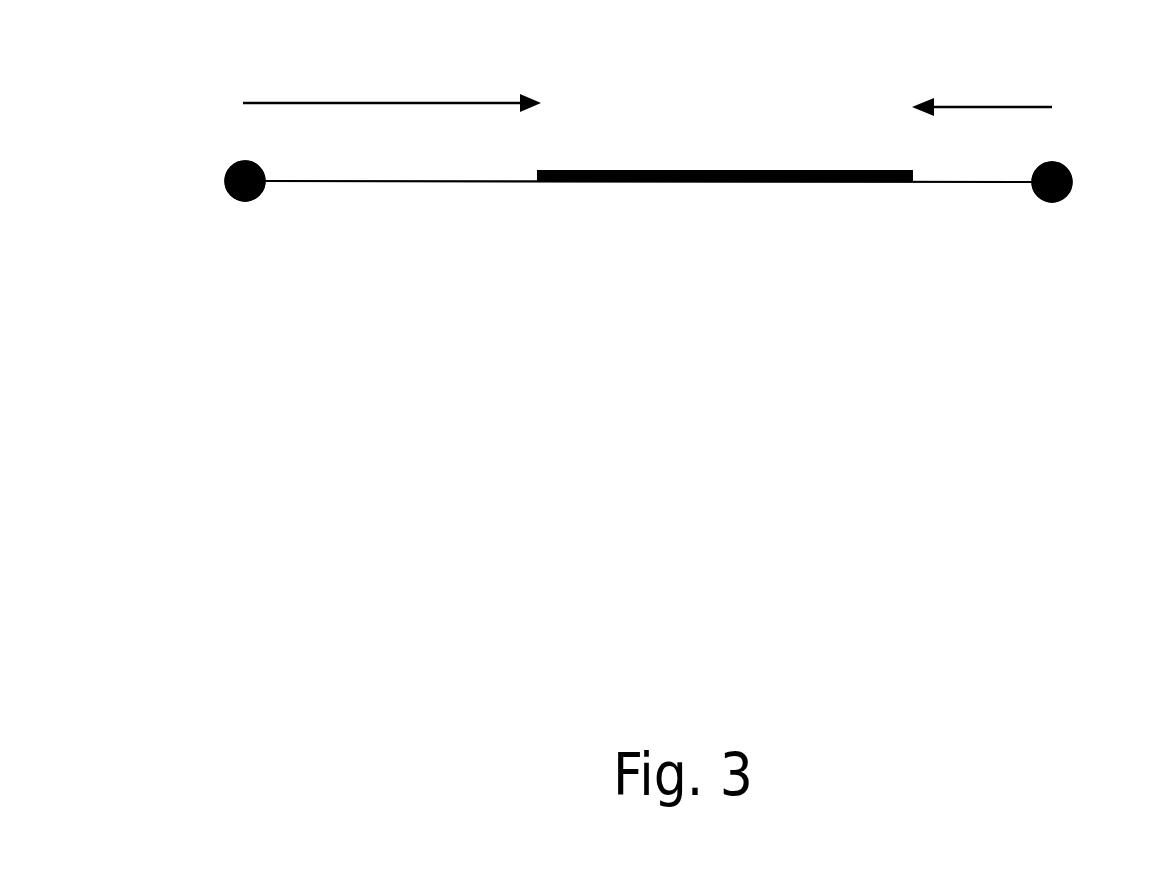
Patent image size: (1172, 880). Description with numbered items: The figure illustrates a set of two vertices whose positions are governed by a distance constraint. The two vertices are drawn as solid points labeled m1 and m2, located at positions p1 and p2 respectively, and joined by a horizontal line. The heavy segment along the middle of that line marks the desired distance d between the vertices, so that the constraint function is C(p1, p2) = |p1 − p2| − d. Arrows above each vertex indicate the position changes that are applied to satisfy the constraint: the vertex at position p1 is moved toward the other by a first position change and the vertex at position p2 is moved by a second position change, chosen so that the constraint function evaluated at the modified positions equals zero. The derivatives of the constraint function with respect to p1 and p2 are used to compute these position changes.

The first mass m1 is at (199, 148).
The second mass m2 is at (1100, 152).
The position of first vertex p1 is at (253, 228).
The position of second vertex p2 is at (1060, 231).
The desired distance d is at (725, 132).